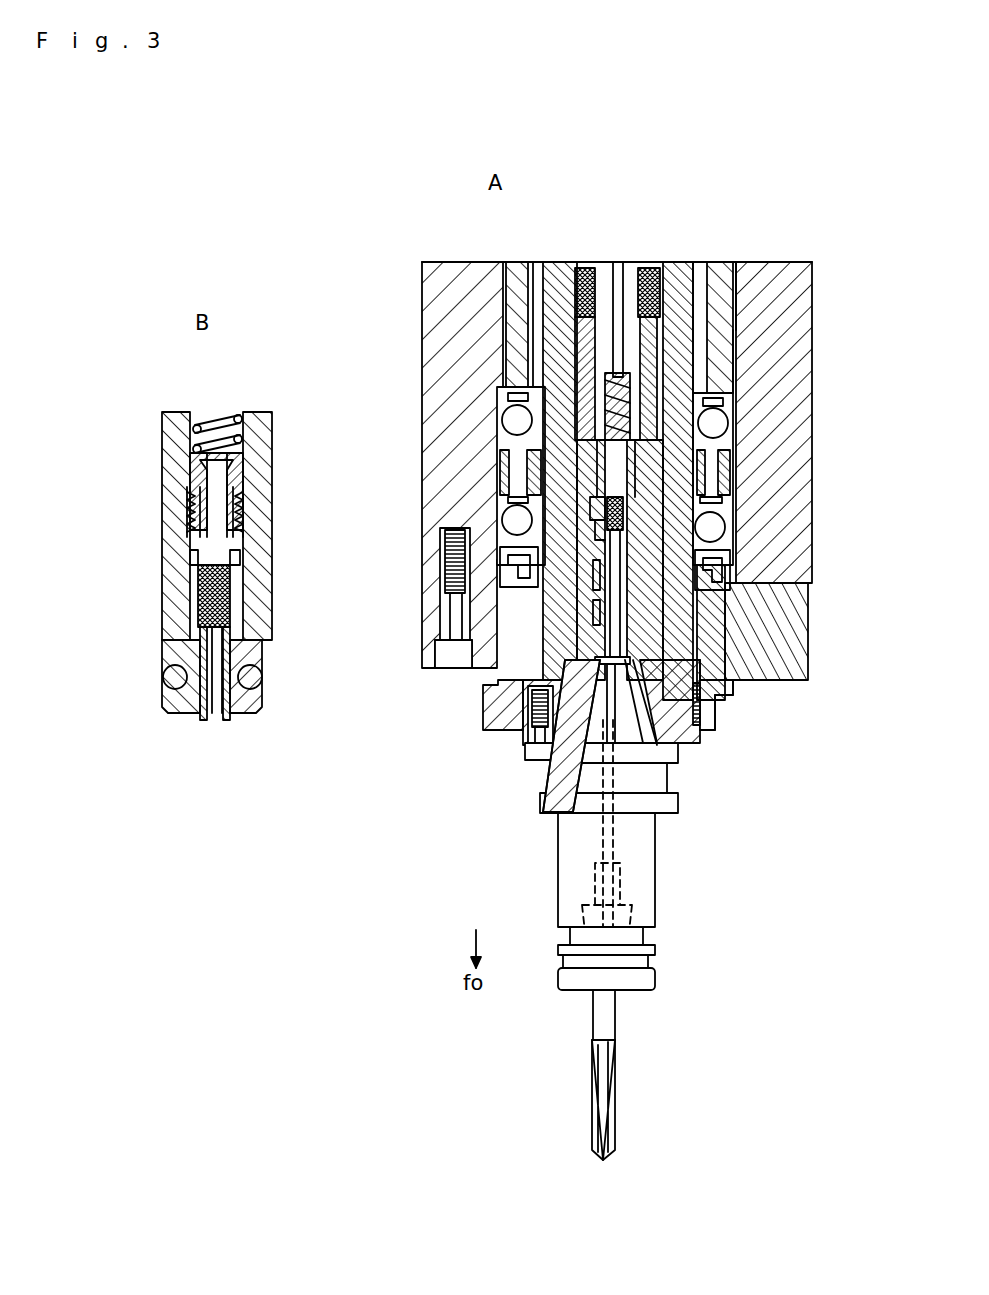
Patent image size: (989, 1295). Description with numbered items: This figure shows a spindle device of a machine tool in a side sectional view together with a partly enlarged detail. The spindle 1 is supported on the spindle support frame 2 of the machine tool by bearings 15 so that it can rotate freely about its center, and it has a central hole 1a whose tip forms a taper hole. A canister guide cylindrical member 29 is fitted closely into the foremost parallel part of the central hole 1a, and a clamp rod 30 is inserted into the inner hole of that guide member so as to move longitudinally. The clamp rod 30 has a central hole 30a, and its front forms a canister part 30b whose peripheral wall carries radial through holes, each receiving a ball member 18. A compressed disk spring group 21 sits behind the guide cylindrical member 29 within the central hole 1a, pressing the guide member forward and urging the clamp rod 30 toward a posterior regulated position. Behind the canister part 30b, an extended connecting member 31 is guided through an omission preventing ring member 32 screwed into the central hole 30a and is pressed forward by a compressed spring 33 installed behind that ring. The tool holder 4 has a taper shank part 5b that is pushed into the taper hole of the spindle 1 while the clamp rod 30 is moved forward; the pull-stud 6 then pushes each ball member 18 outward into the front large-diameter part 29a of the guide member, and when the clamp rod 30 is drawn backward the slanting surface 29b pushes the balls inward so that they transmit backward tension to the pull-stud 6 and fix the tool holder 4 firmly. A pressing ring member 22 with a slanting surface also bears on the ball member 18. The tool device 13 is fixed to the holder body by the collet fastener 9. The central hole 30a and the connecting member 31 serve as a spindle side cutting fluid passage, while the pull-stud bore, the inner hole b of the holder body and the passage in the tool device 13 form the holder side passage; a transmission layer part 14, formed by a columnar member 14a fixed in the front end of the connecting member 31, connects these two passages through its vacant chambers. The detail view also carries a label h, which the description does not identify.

The spindle 1 is at (493, 688).
The central hole 1a is at (560, 392).
The spindle support frame 2 is at (440, 318).
The tool holder 4 is at (549, 840).
The taper shank part 5b is at (640, 713).
The pull-stud 6 is at (725, 612).
The collet fastener 9 is at (552, 975).
The tool device 13 is at (620, 1030).
The transmission layer part 14 is at (612, 515).
The columnar member 14a is at (198, 600).
The bearings 15 is at (716, 425).
The ball member 18 is at (452, 536).
The compressed disk spring group 21 is at (583, 268).
The pressing ring member 22 is at (255, 510).
The canister guide cylindrical member 29 is at (585, 440).
The front large-diameter part 29a is at (590, 575).
The slanting surface 29b is at (590, 610).
The clamp rod 30 is at (640, 268).
The central hole 30a is at (619, 280).
The canister part 30b is at (605, 515).
The connecting member 31 is at (733, 400).
The omission preventing ring member 32 is at (600, 437).
The compressed spring 33 is at (550, 428).
The inner hole b is at (545, 780).
The air passage h is at (215, 715).